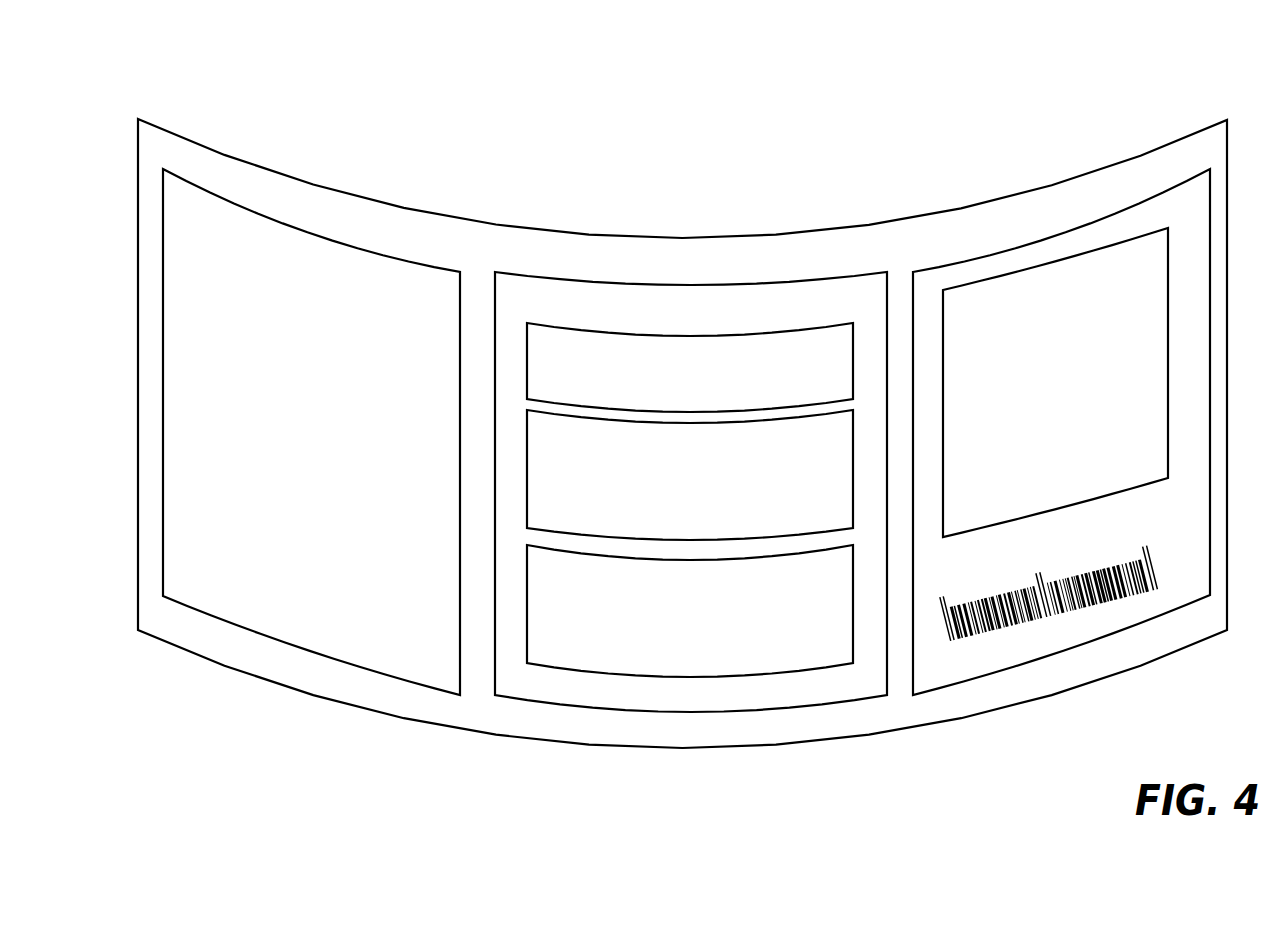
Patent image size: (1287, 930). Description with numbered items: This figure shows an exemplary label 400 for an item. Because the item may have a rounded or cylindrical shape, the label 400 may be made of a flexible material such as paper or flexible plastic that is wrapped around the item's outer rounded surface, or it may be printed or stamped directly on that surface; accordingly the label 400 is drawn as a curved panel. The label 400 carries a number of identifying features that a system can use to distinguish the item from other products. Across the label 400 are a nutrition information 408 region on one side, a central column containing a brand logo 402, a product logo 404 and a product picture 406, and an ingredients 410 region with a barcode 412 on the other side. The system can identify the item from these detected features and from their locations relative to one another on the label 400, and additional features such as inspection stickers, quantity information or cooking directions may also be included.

The label 400 is at (114, 60).
The brand logo 402 is at (834, 356).
The product logo 404 is at (834, 448).
The product picture 406 is at (834, 588).
The nutrition information 408 is at (444, 300).
The ingredients 410 is at (1153, 284).
The barcode 412 is at (1147, 541).